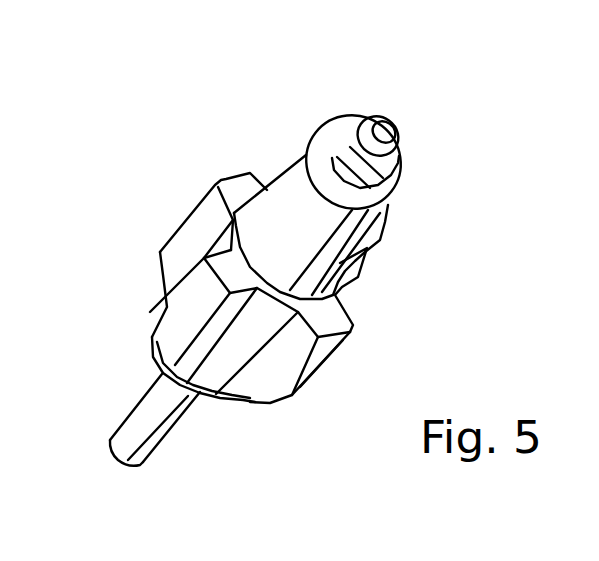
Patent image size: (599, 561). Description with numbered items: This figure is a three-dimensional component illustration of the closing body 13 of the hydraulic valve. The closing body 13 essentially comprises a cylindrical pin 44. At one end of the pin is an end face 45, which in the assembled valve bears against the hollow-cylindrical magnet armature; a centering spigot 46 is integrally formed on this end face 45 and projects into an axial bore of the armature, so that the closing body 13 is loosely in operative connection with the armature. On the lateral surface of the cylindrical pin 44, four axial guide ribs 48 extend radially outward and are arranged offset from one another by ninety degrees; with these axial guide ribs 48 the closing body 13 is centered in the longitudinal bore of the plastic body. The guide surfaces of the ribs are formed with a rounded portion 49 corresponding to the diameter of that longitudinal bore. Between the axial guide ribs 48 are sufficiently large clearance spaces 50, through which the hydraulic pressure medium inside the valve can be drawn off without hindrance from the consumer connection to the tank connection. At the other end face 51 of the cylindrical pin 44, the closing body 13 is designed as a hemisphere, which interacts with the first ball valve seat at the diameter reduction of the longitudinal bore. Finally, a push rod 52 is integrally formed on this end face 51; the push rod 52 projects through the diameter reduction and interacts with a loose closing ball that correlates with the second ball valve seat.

The closing body 13 is at (290, 114).
The cylindrical pin 44 is at (302, 190).
The end face 45 is at (387, 187).
The centering spigot 46 is at (393, 143).
The axial guide ribs 48 is at (205, 198).
The rounded portion 49 is at (235, 175).
The clearance spaces 50 is at (266, 186).
The other end face 51 is at (153, 360).
The push rod 52 is at (143, 423).